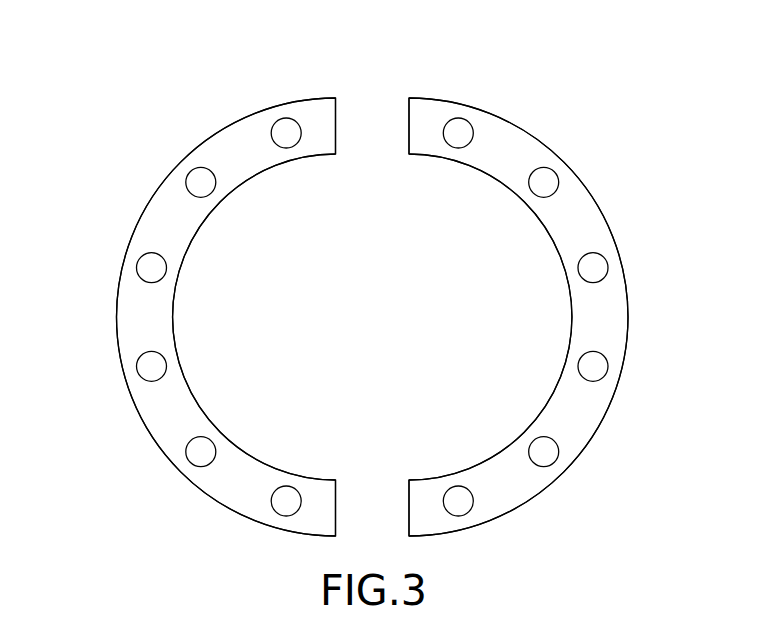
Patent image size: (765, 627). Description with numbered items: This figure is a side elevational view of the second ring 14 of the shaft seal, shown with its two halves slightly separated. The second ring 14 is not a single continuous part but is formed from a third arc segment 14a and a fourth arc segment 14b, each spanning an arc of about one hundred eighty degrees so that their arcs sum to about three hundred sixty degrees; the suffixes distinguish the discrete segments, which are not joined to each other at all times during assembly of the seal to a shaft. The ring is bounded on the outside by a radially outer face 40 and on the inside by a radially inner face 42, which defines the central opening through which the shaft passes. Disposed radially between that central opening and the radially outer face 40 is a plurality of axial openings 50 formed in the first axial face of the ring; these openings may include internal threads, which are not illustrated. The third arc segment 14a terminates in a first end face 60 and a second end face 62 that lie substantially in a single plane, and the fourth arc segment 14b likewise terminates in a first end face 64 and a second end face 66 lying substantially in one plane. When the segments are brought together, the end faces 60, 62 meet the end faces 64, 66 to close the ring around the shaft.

The second ring 14 is at (597, 133).
The third arc segment 14a is at (120, 353).
The fourth arc segment 14b is at (626, 350).
The radially outer face 40 is at (150, 203).
The radially inner face 42 is at (173, 310).
The axial openings 50 is at (138, 273).
The first end face 60 is at (336, 114).
The second end face 62 is at (335, 498).
The first end face 64 is at (409, 135).
The second end face 66 is at (408, 512).